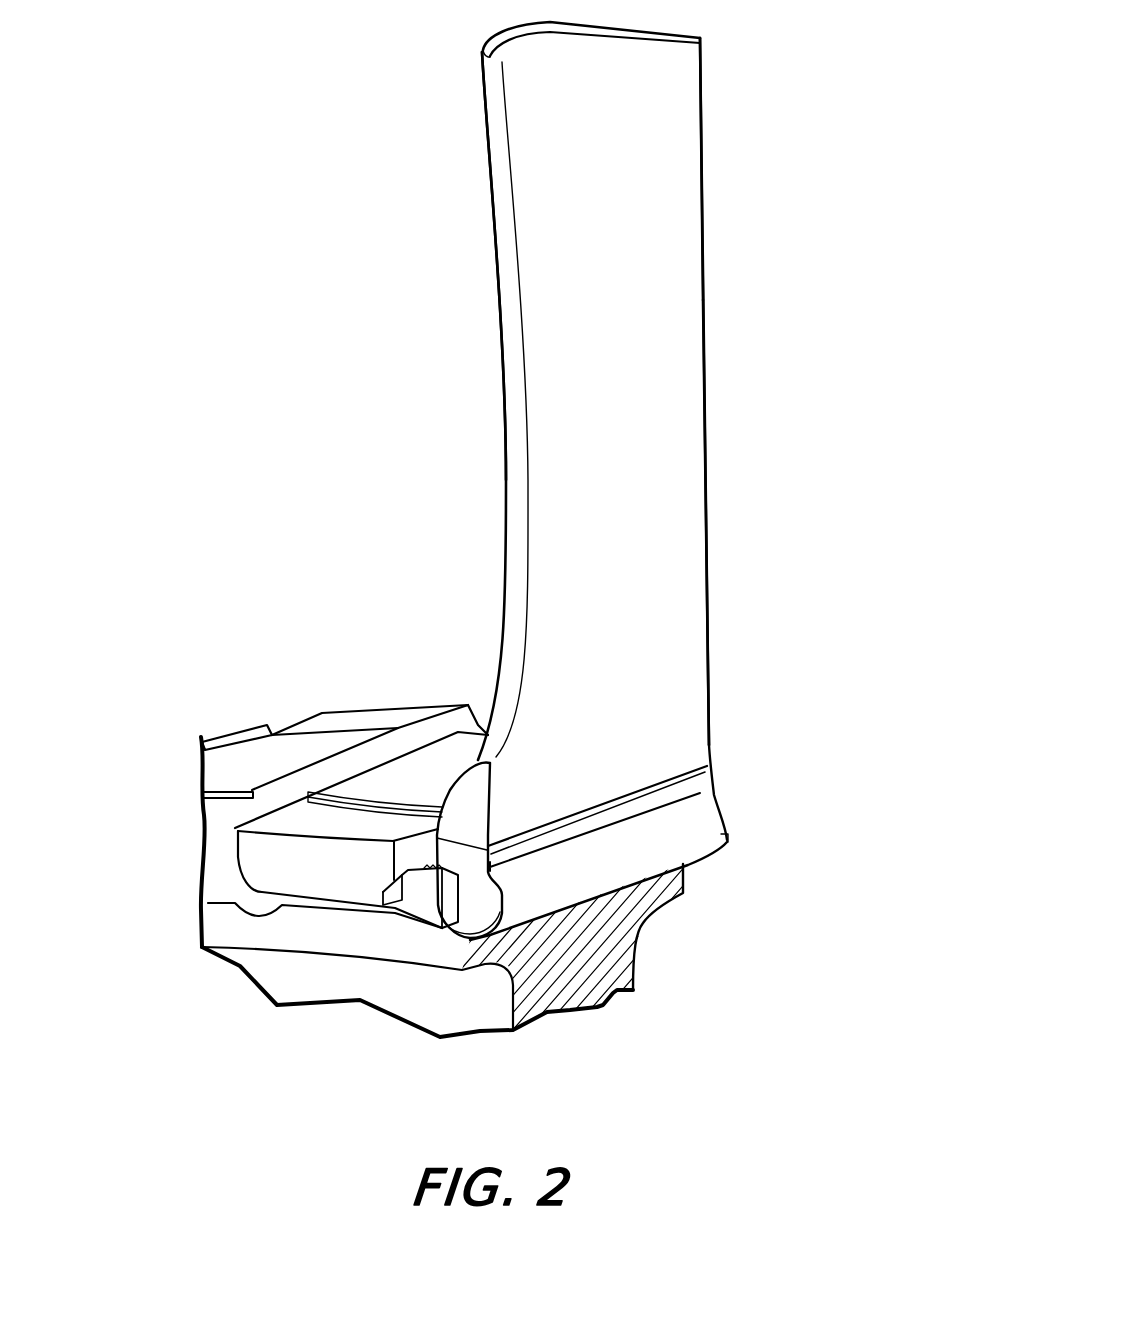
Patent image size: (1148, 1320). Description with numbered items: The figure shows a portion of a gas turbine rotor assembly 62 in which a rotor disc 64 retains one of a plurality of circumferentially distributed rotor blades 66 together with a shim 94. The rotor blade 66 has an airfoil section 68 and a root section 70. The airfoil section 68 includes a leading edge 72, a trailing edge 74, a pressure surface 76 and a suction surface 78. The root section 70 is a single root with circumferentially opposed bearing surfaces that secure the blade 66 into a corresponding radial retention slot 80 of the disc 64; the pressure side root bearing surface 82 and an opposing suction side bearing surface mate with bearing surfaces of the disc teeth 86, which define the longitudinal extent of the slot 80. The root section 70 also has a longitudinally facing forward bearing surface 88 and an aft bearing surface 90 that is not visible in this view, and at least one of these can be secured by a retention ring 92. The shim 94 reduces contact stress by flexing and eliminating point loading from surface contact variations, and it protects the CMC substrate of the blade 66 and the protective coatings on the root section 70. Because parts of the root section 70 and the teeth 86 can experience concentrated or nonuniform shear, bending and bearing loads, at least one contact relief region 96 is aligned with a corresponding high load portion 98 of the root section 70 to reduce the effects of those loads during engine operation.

The gas turbine rotor assembly 62 is at (177, 604).
The rotor disc 64 is at (274, 698).
The rotor blade 66 is at (750, 258).
The airfoil section 68 is at (718, 101).
The root section 70 is at (729, 850).
The leading edge 72 is at (497, 228).
The trailing edge 74 is at (702, 212).
The pressure surface 76 is at (566, 132).
The suction surface 78 is at (707, 339).
The radial retention slot 80 is at (236, 830).
The pressure side root bearing surface 82 is at (590, 825).
The disc teeth 86 is at (392, 838).
The forward bearing surface 88 is at (429, 860).
The aft bearing surface 90 is at (727, 808).
The retention ring 92 is at (234, 882).
The shim 94 is at (691, 803).
The contact relief region 96 is at (522, 877).
The high load portion 98 is at (499, 858).